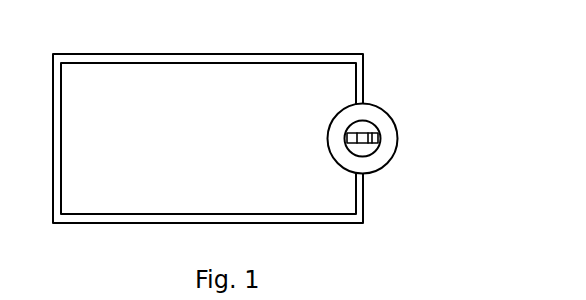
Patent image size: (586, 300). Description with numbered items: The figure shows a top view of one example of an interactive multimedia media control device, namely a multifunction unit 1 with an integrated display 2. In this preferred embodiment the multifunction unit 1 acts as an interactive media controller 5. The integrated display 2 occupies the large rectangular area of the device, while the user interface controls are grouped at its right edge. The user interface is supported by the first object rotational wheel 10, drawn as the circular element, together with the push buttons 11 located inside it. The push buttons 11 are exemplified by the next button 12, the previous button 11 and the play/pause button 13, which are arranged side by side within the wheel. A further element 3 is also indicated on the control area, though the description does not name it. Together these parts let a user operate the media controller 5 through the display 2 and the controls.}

The multifunction unit 1 is at (366, 105).
The integrated display 2 is at (290, 70).
The sensor module 3 is at (368, 125).
The interactive media controller 5 is at (364, 53).
The first object rotational wheel 10 is at (377, 111).
The push buttons 11 is at (378, 141).
The next button 12 is at (365, 145).
The play/pause button 13 is at (346, 141).